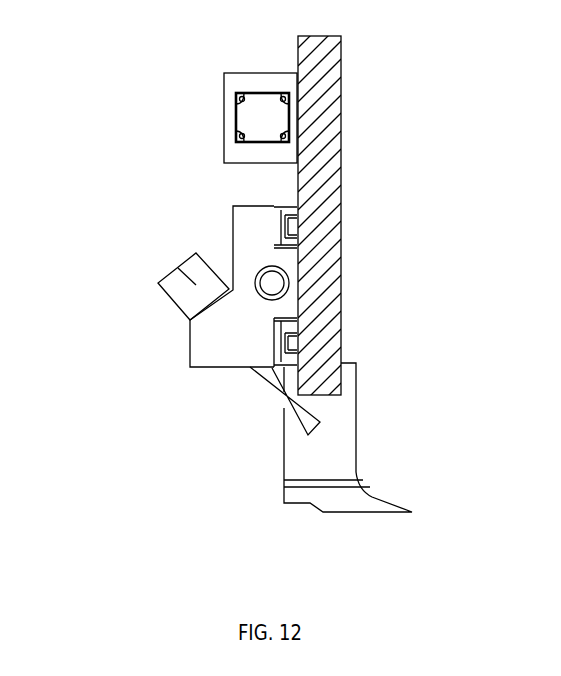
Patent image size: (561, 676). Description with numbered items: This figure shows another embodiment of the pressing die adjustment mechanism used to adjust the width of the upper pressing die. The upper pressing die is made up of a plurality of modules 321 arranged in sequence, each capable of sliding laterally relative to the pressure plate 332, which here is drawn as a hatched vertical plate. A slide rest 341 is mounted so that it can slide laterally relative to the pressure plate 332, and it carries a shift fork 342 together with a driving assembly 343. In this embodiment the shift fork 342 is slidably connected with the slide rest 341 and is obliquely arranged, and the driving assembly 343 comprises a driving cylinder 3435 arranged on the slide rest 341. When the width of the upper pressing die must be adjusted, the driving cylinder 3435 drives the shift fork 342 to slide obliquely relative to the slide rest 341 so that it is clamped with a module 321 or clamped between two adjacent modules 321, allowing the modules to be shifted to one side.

The module 321 is at (330, 450).
The pressure plate 332 is at (322, 212).
The slide rest 341 is at (247, 257).
The shift fork 342 is at (283, 393).
The driving assembly 343 is at (180, 314).
The driving cylinder 3435 is at (178, 268).